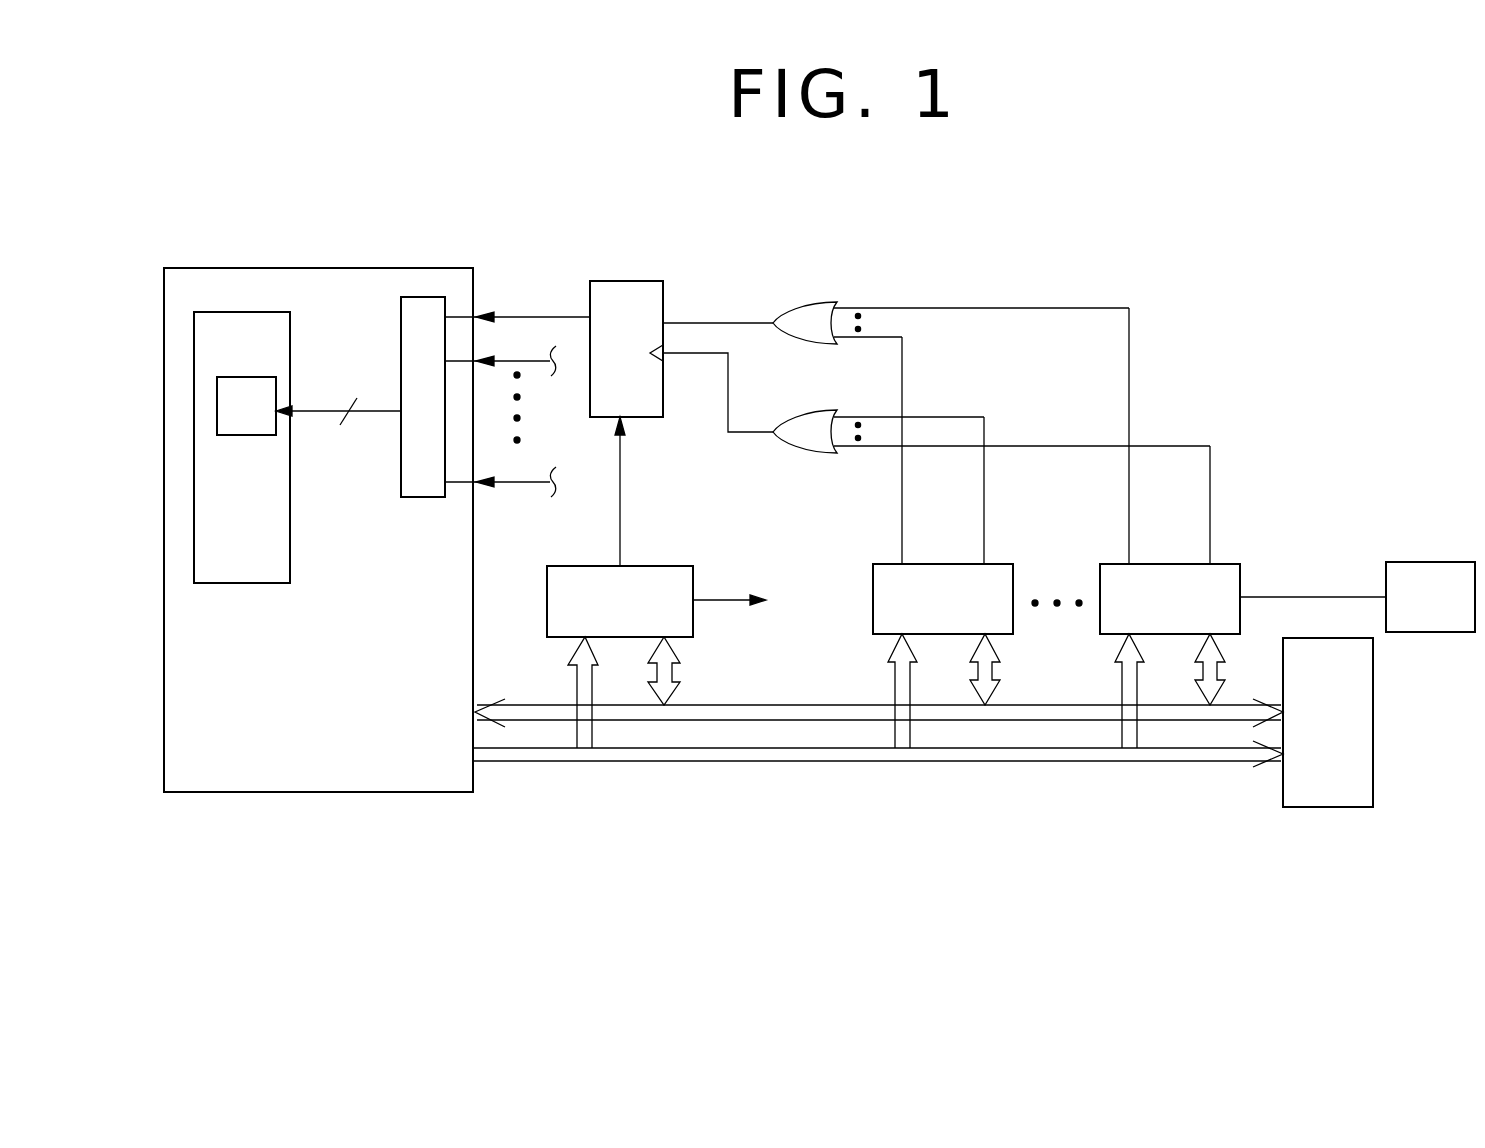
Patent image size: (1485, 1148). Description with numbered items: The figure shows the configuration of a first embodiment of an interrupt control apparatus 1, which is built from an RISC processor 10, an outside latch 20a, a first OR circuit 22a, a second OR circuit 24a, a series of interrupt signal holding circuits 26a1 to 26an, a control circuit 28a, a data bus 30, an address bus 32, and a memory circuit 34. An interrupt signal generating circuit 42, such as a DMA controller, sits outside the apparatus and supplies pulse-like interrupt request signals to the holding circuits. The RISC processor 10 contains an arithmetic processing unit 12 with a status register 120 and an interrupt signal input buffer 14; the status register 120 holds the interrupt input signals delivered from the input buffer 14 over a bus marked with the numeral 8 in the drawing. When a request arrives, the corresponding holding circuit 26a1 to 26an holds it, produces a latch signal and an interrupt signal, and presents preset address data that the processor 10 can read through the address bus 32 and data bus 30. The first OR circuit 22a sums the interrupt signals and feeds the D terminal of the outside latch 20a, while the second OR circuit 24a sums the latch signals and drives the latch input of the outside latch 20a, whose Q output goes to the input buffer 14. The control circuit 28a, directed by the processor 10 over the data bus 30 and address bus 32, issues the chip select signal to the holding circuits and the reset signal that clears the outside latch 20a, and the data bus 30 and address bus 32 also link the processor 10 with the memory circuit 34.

The interrupt control apparatus 1 is at (885, 922).
The RISC processor 10 is at (218, 268).
The arithmetic processing unit 12 is at (257, 583).
The status register 120 is at (262, 377).
The 8-bit interrupt bus 8 is at (338, 427).
The interrupt signal input buffer 14 is at (418, 497).
The outside latch 20a is at (663, 395).
The first OR circuit 22a is at (821, 302).
The second OR circuit 24a is at (820, 453).
The interrupt signal holding circuit 26a1 is at (1055, 542).
The interrupt signal holding circuit 26an is at (1238, 564).
The control circuit 28a is at (690, 566).
The data bus 30 is at (815, 705).
The address bus 32 is at (808, 762).
The memory circuit 34 is at (1343, 807).
The interrupt signal generating circuit 42 is at (1448, 562).